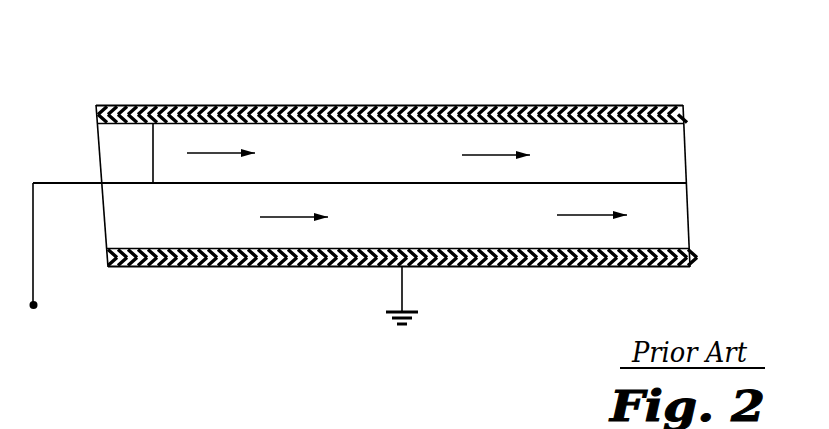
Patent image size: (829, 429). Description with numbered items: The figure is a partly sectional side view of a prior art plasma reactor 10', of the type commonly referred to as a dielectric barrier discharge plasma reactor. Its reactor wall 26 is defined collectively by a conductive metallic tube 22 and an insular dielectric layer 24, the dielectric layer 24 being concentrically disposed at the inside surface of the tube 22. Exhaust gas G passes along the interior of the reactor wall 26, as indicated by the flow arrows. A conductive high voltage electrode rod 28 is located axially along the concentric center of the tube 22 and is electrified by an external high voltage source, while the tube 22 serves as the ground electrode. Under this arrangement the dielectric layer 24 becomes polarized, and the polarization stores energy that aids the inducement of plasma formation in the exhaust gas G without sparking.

The plasma reactor 10' is at (396, 176).
The conductive metallic tube 22 is at (396, 147).
The insular dielectric layer 24 is at (204, 105).
The reactor wall 26 is at (327, 101).
The conductive high voltage electrode rod 28 is at (157, 124).
The exhaust gas G is at (299, 220).